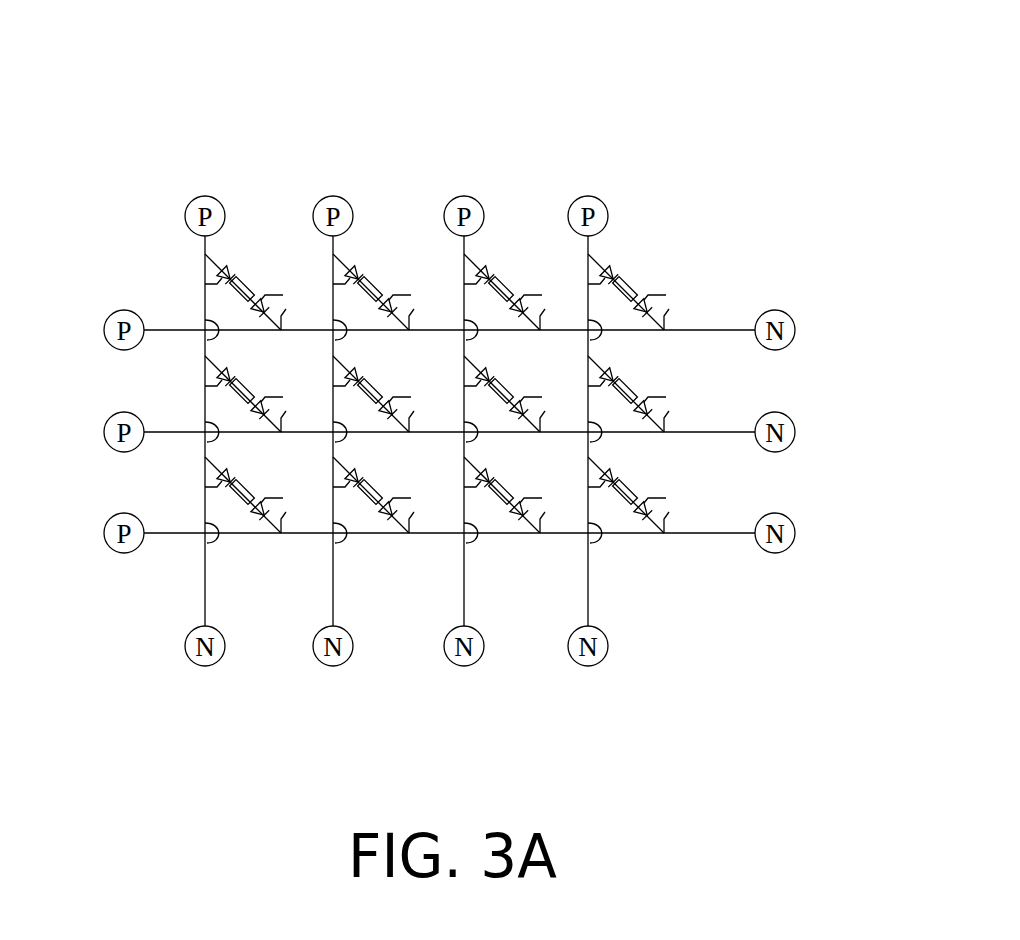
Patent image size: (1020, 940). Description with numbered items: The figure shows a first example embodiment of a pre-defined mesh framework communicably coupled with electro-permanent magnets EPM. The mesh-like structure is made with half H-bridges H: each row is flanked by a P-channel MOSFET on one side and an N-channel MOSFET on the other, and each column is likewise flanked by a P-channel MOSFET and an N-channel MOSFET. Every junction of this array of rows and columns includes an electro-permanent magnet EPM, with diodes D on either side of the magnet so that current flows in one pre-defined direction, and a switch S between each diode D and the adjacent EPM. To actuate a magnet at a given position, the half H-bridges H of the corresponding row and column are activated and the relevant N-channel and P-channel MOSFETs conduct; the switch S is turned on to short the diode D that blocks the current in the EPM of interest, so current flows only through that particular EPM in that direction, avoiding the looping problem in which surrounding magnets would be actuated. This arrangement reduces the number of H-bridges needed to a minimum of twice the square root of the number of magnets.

The half H-bridges H is at (180, 140).
The electro-permanent magnet EPM is at (451, 370).
The diode D is at (222, 274).
The switch S is at (213, 290).